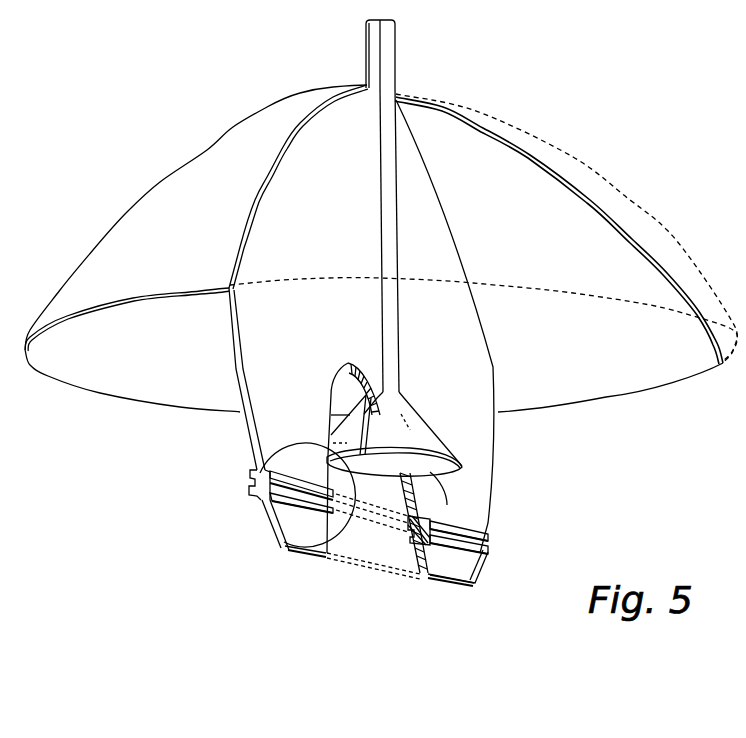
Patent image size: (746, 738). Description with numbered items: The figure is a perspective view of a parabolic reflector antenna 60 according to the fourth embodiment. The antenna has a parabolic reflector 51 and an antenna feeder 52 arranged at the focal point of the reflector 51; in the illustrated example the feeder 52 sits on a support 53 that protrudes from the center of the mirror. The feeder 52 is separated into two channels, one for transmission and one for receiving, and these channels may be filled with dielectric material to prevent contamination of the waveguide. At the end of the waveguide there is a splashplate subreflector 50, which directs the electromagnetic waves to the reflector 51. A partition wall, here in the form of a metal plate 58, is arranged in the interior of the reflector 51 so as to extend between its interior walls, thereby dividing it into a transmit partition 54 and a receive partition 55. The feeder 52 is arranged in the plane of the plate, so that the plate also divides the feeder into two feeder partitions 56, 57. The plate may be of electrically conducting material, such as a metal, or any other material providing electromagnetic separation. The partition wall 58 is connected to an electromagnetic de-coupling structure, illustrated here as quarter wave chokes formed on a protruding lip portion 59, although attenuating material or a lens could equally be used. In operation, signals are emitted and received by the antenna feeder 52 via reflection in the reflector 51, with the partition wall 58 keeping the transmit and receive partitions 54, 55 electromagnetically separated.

The splashplate subreflector 50 is at (284, 542).
The parabolic reflector 51 is at (182, 190).
The antenna feeder 52 is at (428, 448).
The support 53 is at (393, 160).
The transmit partition 54 is at (167, 362).
The receive partition 55 is at (590, 362).
The feeder partition 56 is at (254, 470).
The feeder partition 57 is at (422, 436).
The partition wall 58 is at (465, 490).
The protruding lip portion 59 is at (447, 582).
The parabolic antenna 60 is at (607, 94).